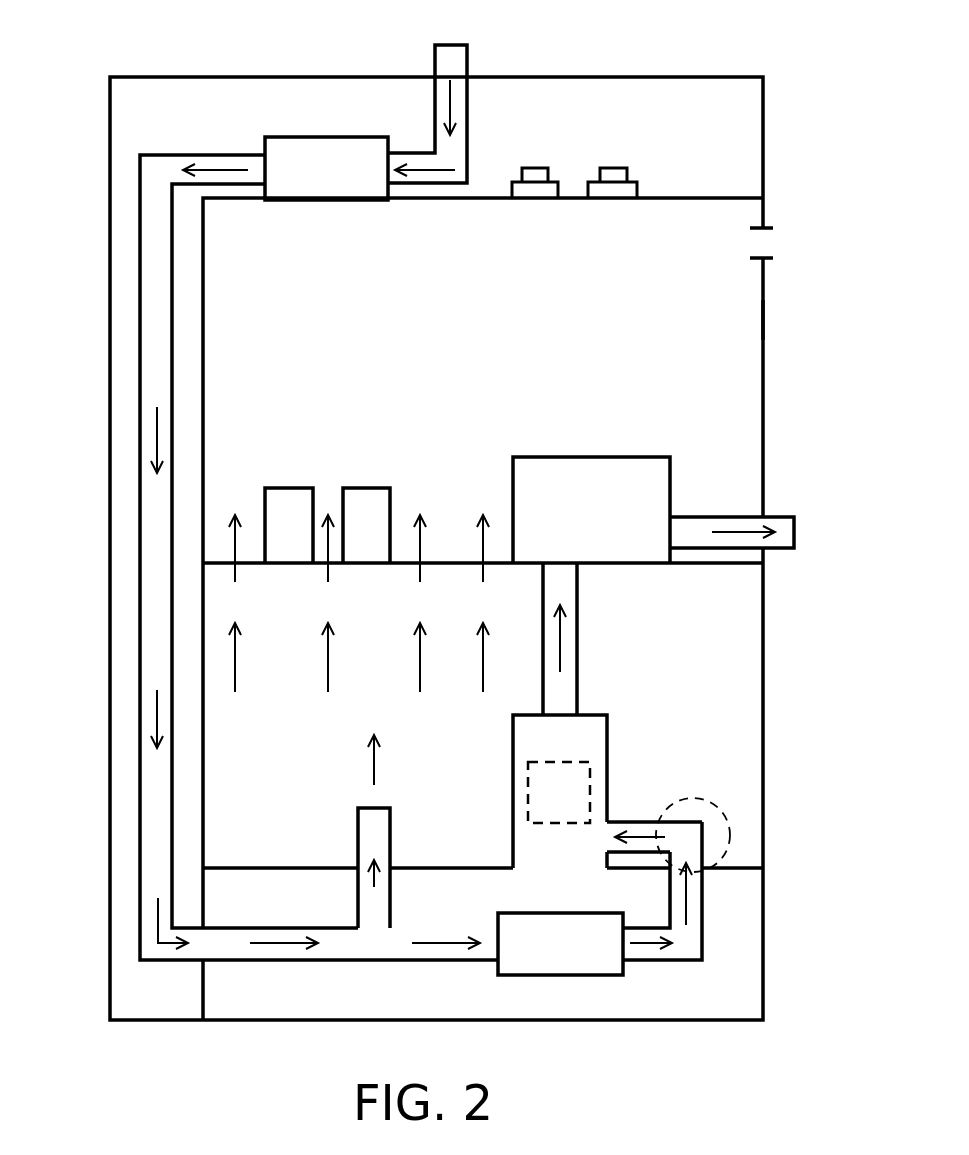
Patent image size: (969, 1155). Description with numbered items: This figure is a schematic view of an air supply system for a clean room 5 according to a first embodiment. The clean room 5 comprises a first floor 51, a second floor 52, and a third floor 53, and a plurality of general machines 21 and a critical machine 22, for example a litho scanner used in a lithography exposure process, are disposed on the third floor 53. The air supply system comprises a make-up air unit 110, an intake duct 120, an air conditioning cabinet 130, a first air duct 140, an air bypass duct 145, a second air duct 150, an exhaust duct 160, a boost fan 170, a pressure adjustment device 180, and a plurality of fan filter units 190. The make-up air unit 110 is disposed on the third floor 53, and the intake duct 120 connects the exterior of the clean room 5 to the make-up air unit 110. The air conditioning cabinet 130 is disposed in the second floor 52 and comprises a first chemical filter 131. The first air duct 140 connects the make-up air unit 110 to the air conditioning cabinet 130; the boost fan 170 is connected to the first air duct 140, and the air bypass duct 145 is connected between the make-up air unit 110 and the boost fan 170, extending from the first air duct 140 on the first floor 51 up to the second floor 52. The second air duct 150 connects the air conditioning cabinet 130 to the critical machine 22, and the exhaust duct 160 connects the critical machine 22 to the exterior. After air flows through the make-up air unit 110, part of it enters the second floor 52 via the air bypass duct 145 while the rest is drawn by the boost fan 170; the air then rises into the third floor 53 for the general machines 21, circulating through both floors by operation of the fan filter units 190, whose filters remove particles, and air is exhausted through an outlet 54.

The clean room 5 is at (778, 308).
The general machines 21 is at (288, 505).
The critical machine 22 is at (590, 475).
The first floor 51 is at (750, 988).
The second floor 52 is at (750, 622).
The third floor 53 is at (750, 362).
The outlet 54 is at (760, 242).
The make-up air unit 110 is at (327, 157).
The intake duct 120 is at (440, 100).
The air conditioning cabinet 130 is at (622, 743).
The first chemical filter 131 is at (590, 770).
The first air duct 140 is at (160, 320).
The air bypass duct 145 is at (372, 838).
The second air duct 150 is at (563, 695).
The exhaust duct 160 is at (720, 525).
The boost fan 170 is at (560, 940).
The pressure adjustment device 180 is at (732, 844).
The fan filter units 190 is at (535, 175).